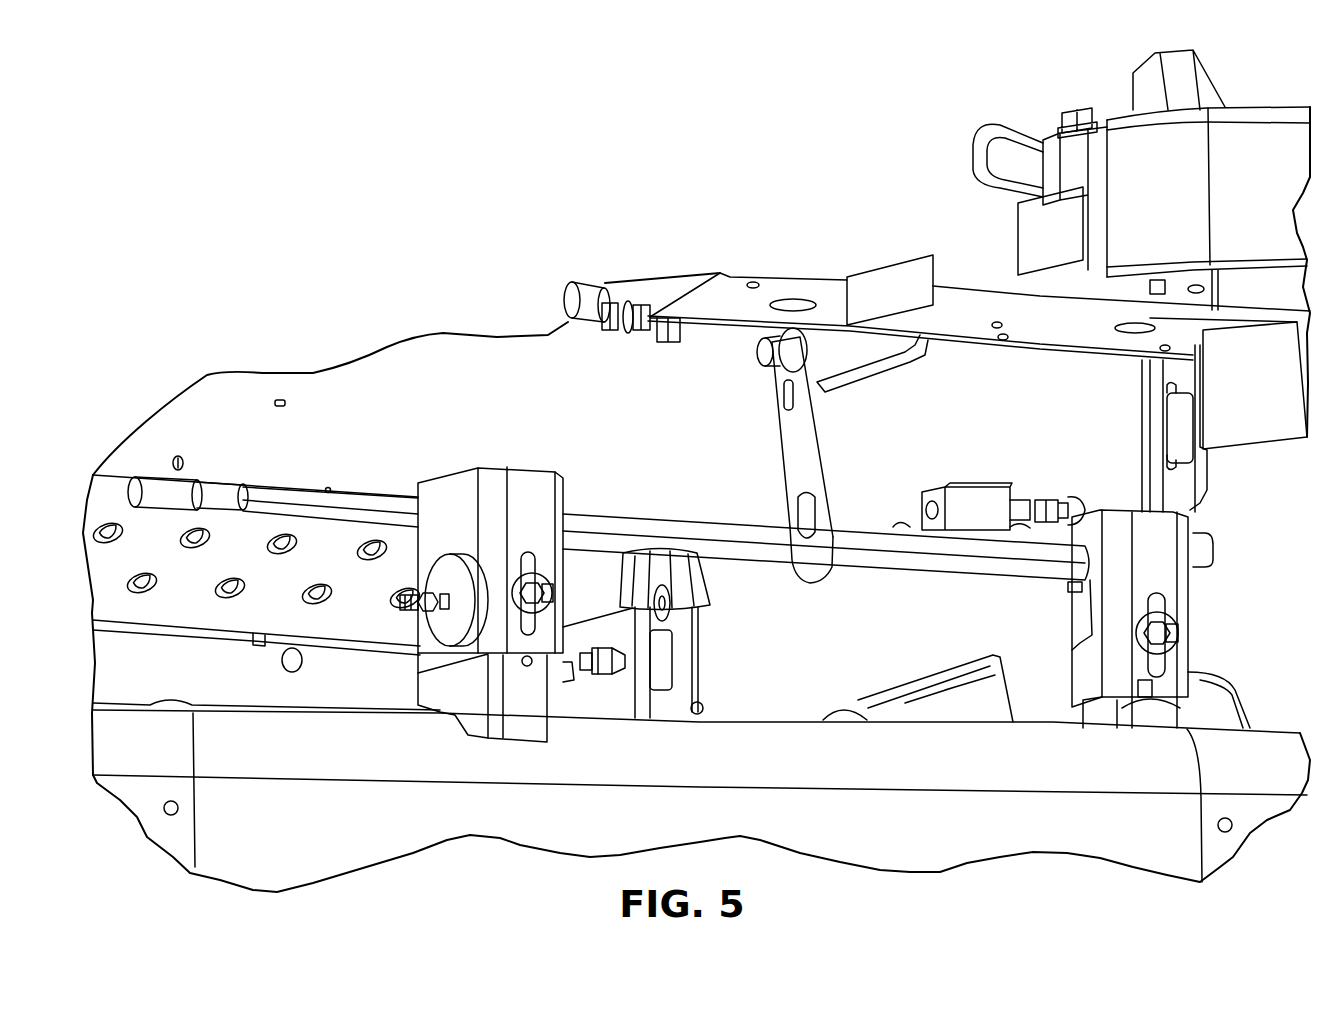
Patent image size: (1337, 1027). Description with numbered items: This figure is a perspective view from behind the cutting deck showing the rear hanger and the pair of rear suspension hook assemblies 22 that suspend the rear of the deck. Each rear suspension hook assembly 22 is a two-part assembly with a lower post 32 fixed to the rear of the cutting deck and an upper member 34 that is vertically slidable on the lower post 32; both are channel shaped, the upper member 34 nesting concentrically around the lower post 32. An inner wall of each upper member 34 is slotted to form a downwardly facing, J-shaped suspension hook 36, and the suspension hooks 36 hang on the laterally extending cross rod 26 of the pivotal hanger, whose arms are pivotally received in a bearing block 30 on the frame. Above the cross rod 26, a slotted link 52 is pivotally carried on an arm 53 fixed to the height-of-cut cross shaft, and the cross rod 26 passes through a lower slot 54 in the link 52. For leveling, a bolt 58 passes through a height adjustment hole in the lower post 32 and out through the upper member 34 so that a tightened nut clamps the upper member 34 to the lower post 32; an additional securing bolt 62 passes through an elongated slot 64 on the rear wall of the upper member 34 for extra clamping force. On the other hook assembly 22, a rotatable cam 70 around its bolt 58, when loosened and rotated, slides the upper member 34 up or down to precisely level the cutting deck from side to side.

The rear suspension hook assembly 22 is at (477, 754).
The cross rod 26 is at (752, 548).
The bearing block 30 is at (978, 505).
The lower post 32 is at (450, 687).
The upper member 34 is at (522, 489).
The suspension hook 36 is at (1072, 585).
The slotted link 52 is at (800, 452).
The arm 53 is at (867, 353).
The lower slot 54 is at (813, 507).
The bolt 58 is at (410, 608).
The securing bolt 62 is at (565, 656).
The elongated slot 64 is at (1160, 603).
The rotatable cam 70 is at (443, 550).